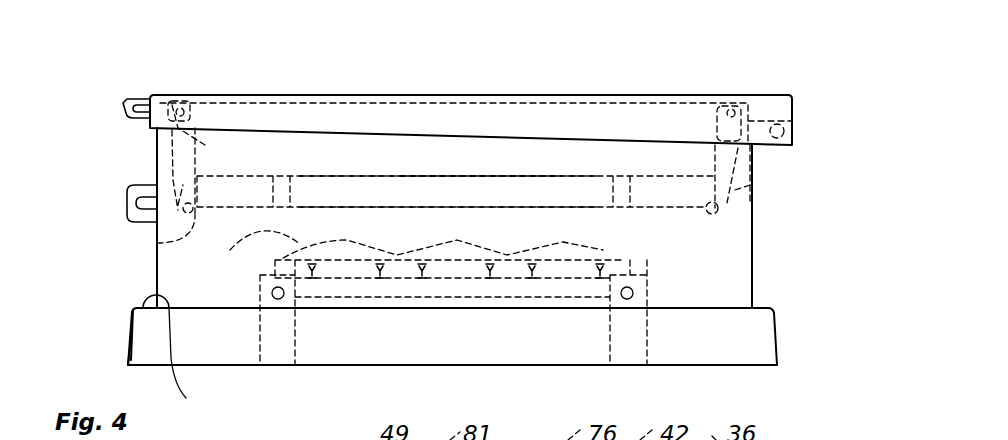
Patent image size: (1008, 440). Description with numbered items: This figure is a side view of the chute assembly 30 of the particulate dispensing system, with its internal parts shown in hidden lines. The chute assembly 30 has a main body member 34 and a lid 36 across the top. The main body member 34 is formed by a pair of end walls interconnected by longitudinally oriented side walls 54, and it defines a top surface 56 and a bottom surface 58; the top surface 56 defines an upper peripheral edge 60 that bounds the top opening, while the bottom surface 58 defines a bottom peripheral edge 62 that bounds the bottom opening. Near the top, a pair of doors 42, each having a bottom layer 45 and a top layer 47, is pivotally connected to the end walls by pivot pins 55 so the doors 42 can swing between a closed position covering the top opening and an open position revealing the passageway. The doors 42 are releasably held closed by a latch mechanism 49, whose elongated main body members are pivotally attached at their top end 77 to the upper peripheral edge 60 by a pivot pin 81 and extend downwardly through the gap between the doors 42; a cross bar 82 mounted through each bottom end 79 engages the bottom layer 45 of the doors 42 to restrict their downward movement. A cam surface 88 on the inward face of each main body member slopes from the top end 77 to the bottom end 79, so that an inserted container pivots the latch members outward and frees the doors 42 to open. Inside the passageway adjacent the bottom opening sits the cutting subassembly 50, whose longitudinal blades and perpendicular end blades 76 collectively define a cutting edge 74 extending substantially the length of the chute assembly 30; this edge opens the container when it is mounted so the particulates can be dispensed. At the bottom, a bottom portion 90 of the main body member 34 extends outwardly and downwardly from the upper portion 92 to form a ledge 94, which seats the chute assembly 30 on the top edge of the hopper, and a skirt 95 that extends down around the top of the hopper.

The chute assembly 30 is at (137, 258).
The main body member 34 is at (165, 281).
The lid 36 is at (763, 108).
The doors 42 is at (517, 100).
The bottom layer 45 is at (468, 178).
The top layer 47 is at (373, 207).
The latch mechanism 49 is at (698, 120).
The cutting subassembly 50 is at (625, 242).
The side walls 54 is at (740, 290).
The pivot pins 55 is at (737, 188).
The top surface 56 is at (613, 100).
The bottom surface 58 is at (230, 365).
The upper peripheral edge 60 is at (333, 210).
The bottom peripheral edge 62 is at (440, 365).
The cutting edge 74 is at (430, 298).
The end blades 76 is at (172, 145).
The top end 77 is at (198, 130).
The bottom end 79 is at (157, 243).
The pivot pin 81 is at (173, 98).
The cross bar 82 is at (165, 185).
The cam surface 88 is at (205, 137).
The bottom portion 90 is at (140, 327).
The upper portion 92 is at (737, 262).
The ledge 94 is at (181, 356).
The skirt 95 is at (127, 355).